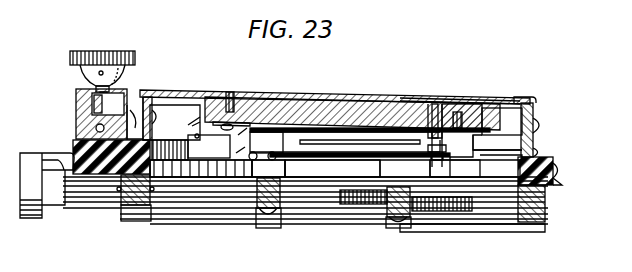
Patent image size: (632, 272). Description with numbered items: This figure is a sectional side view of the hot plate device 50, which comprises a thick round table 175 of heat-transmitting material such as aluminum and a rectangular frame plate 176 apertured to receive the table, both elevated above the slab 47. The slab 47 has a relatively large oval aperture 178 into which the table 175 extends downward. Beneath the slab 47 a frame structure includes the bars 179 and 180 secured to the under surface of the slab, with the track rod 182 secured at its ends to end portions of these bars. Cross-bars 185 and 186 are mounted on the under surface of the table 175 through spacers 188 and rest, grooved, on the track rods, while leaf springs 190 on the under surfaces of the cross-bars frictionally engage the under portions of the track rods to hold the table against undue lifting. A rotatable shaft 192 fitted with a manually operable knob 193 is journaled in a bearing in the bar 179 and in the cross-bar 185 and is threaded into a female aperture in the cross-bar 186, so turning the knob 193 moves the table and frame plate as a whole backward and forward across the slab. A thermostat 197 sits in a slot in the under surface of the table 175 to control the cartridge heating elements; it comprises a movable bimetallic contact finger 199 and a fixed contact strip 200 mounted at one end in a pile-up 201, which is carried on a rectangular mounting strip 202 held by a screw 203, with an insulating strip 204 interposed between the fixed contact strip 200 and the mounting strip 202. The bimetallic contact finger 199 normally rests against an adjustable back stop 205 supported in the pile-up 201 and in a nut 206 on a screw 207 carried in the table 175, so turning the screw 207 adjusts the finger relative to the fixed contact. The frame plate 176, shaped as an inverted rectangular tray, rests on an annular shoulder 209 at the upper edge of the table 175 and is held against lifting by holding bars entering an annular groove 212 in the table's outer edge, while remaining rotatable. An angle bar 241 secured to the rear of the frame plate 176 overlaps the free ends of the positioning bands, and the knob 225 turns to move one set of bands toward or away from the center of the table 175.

The knob 225 is at (99, 52).
The frame plate 176 is at (163, 91).
The screw 203 is at (229, 92).
The mounting strip 202 is at (263, 120).
The insulating strip 204 is at (362, 124).
The round table 175 is at (396, 104).
The screw 207 is at (436, 96).
The hot plate device 50 is at (458, 102).
The angle bar 241 is at (537, 100).
The annular shoulder 209 is at (491, 120).
The annular groove 212 is at (491, 142).
The pile-up 201 is at (283, 142).
The fixed contact strip 200 is at (345, 142).
The thermostat 197 is at (360, 153).
The back stop 205 is at (410, 146).
The nut 206 is at (443, 156).
The spacers 188 is at (284, 172).
The bimetallic contact finger 199 is at (332, 171).
The slab 47 is at (555, 178).
The oval aperture 178 is at (482, 178).
The bar 180 is at (546, 211).
The knob 193 is at (37, 220).
The bar 179 is at (136, 221).
The rotatable shaft 192 is at (199, 210).
The cross-bar 185 is at (256, 196).
The leaf springs 190 is at (269, 228).
The cross-bar 186 is at (428, 212).
The track rod 182 is at (497, 232).